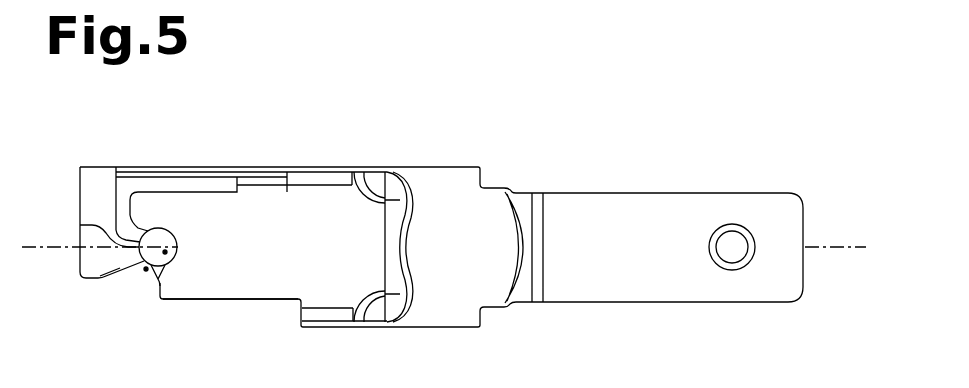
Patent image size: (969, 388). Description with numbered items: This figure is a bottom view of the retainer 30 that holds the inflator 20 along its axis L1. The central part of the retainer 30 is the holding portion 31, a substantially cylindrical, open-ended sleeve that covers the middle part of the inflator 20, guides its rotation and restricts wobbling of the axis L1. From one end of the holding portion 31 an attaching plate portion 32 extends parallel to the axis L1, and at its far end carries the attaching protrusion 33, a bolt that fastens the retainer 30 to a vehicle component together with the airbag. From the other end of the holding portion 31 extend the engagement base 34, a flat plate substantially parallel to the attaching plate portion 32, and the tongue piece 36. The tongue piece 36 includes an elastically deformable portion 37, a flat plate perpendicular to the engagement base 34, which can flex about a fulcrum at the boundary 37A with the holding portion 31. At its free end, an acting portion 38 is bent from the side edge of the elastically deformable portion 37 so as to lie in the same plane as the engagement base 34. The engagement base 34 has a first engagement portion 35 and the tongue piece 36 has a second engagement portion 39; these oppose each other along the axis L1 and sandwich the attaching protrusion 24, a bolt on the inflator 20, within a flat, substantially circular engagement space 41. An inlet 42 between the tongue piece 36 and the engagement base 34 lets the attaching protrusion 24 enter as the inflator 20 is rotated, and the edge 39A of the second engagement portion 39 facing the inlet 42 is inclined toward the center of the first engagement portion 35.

The inflator 20 is at (242, 280).
The attaching protrusion 24 is at (168, 275).
The retainer 30 is at (302, 219).
The holding portion 31 is at (441, 167).
The attaching plate portion 32 is at (597, 199).
The attaching protrusion 33 is at (733, 230).
The engagement base 34 is at (200, 300).
The first engagement portion 35 is at (168, 229).
The tongue piece 36 is at (216, 185).
The elastically deformable portion 37 is at (165, 167).
The boundary 37A is at (363, 167).
The acting portion 38 is at (95, 178).
The second engagement portion 39 is at (80, 224).
The edge 39A is at (127, 268).
The engagement space 41 is at (166, 252).
The inlet 42 is at (146, 271).
The axis L1 is at (843, 247).